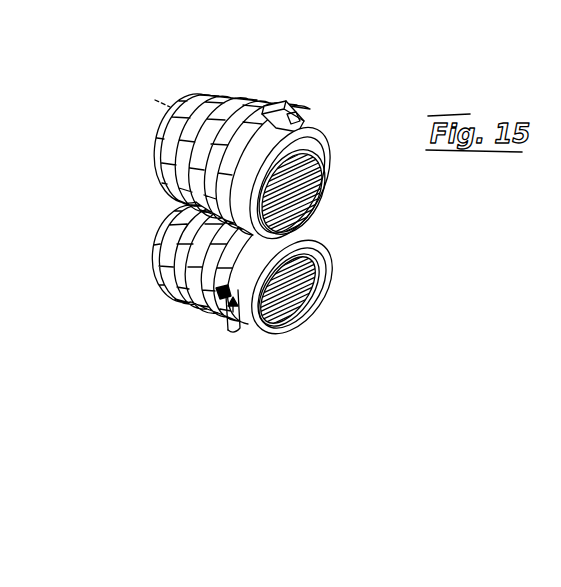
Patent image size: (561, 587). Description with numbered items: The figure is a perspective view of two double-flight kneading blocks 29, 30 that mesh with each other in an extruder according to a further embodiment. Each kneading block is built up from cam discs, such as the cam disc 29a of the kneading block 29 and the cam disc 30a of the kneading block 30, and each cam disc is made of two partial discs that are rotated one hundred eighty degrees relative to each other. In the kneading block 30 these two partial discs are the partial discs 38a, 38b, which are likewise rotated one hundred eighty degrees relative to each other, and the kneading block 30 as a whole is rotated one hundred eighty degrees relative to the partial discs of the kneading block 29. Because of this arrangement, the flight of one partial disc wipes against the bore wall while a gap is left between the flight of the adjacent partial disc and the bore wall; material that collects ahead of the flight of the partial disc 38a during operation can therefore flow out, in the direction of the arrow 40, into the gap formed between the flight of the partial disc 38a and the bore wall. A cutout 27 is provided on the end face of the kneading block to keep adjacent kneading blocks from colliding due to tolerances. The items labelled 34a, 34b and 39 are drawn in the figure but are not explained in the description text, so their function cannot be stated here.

The kneading block 29 is at (258, 87).
The cam disc 29a is at (337, 202).
The locking tab 34a is at (294, 108).
The locking tab recess 34b is at (301, 127).
The cutout 27 is at (321, 243).
The kneading block 30 is at (140, 297).
The cam disc 30a is at (333, 304).
The latch element 39 is at (220, 295).
The partial disc 38a is at (221, 312).
The arrow 40 is at (222, 314).
The partial disc 38b is at (238, 318).